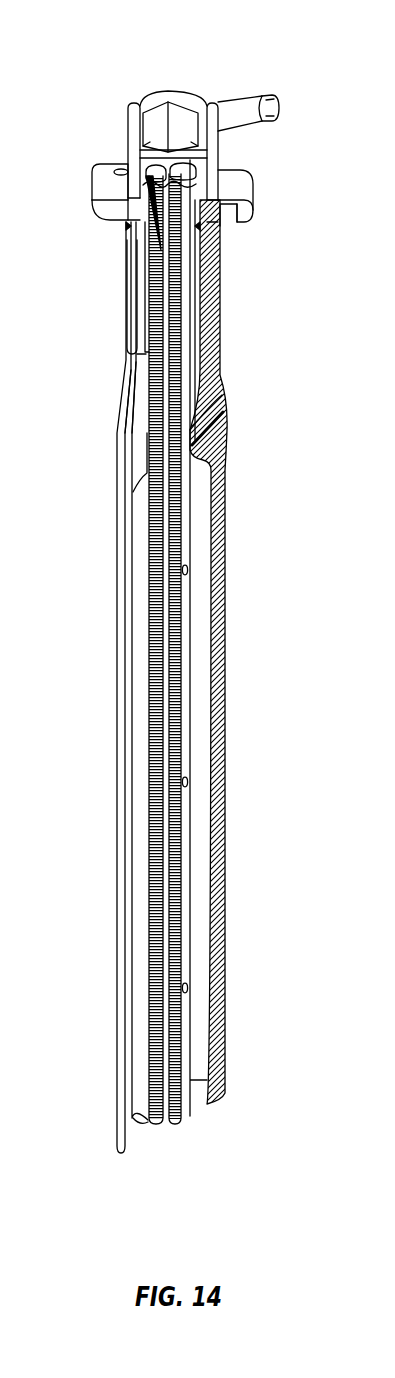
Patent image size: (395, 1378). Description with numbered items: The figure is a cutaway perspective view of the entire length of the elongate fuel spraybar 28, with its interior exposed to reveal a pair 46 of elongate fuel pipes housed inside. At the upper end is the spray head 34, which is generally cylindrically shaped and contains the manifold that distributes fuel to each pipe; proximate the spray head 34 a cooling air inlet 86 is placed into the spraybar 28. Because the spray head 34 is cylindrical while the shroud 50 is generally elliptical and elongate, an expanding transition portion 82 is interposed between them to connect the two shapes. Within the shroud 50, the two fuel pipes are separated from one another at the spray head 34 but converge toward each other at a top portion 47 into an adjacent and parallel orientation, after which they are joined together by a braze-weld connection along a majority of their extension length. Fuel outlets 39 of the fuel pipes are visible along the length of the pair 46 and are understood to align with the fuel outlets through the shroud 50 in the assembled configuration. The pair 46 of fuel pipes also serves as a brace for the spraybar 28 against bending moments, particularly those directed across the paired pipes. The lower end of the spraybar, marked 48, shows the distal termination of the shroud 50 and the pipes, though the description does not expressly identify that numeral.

The spraybar 28 is at (153, 50).
The spray head 34 is at (94, 132).
The top portion 47 is at (156, 254).
The cooling air inlet 86 is at (130, 313).
The transition portion 82 is at (110, 394).
The shroud 50 is at (218, 520).
The fuel outlets 39 is at (189, 573).
The pair of elongate fuel pipes 46 is at (186, 876).
The distal end 48 is at (192, 1138).